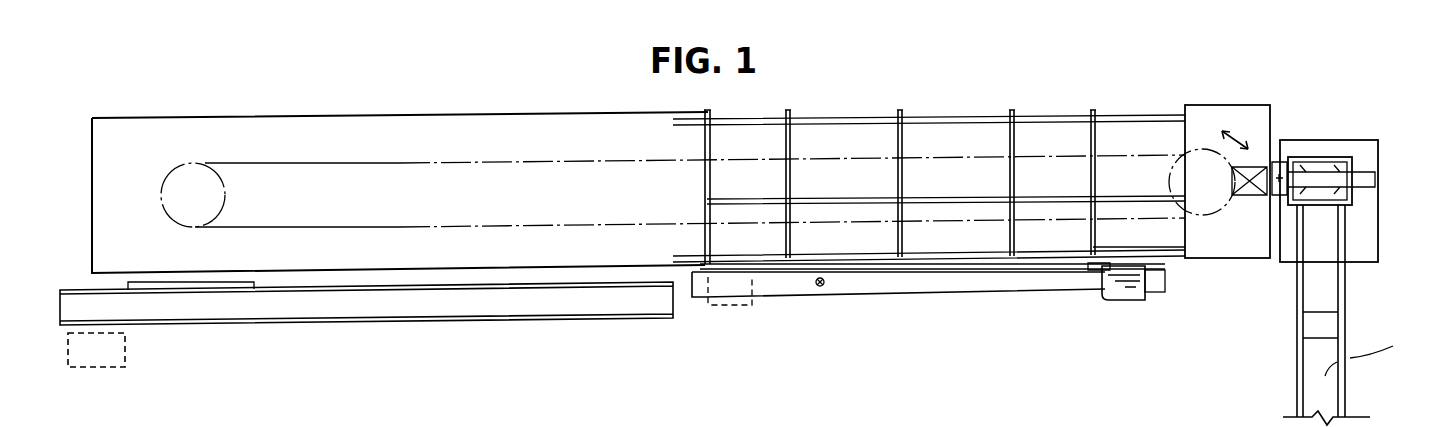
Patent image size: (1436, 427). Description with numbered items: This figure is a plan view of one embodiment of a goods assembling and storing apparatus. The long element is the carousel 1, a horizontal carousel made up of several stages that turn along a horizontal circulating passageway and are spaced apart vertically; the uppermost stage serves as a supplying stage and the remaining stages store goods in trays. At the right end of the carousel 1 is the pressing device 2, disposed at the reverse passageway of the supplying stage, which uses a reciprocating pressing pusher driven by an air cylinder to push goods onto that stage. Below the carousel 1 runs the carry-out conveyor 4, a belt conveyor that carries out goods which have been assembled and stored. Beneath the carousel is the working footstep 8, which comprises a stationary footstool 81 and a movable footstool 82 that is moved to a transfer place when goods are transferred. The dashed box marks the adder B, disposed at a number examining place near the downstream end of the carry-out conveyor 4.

The carousel 1 is at (825, 143).
The pressing device 2 is at (1320, 180).
The carry-out conveyor 4 is at (348, 303).
The working footstep 8 is at (928, 323).
The stationary footstool 81 is at (978, 282).
The movable footstool 82 is at (1118, 297).
The adder B is at (100, 367).